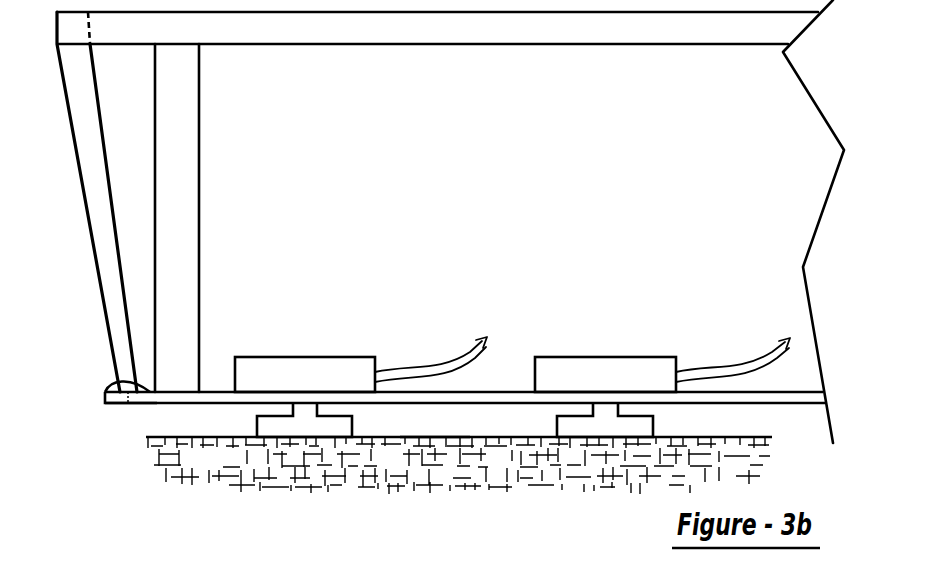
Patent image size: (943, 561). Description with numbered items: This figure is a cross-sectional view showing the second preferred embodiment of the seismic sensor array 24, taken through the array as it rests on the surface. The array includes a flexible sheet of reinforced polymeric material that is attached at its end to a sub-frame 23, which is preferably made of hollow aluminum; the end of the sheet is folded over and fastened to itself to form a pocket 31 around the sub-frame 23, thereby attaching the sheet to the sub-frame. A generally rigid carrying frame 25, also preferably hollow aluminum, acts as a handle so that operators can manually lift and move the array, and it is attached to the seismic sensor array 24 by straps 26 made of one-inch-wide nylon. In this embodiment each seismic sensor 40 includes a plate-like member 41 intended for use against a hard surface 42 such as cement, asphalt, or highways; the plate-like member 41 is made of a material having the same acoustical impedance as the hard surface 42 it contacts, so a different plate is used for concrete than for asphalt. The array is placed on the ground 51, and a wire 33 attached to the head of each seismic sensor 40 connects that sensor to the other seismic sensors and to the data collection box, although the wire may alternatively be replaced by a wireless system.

The sub-frame 23 is at (128, 403).
The seismic sensor array 24 is at (413, 419).
The carrying frame 25 is at (172, 98).
The straps 26 is at (99, 280).
The pocket 31 is at (110, 384).
The wire 33 is at (455, 358).
The seismic sensor 40 is at (303, 357).
The plate-like member 41 is at (287, 423).
The hard surface 42 is at (545, 462).
The ground 51 is at (226, 405).